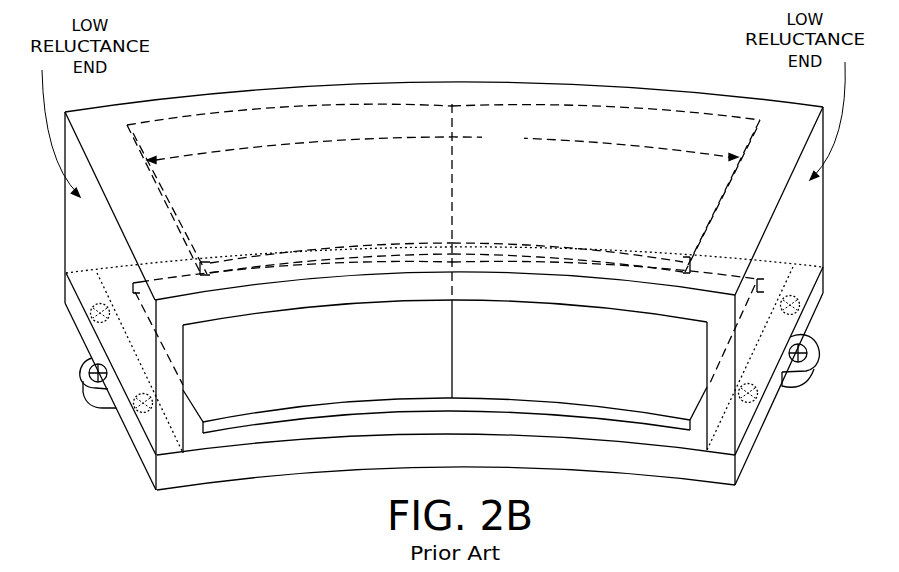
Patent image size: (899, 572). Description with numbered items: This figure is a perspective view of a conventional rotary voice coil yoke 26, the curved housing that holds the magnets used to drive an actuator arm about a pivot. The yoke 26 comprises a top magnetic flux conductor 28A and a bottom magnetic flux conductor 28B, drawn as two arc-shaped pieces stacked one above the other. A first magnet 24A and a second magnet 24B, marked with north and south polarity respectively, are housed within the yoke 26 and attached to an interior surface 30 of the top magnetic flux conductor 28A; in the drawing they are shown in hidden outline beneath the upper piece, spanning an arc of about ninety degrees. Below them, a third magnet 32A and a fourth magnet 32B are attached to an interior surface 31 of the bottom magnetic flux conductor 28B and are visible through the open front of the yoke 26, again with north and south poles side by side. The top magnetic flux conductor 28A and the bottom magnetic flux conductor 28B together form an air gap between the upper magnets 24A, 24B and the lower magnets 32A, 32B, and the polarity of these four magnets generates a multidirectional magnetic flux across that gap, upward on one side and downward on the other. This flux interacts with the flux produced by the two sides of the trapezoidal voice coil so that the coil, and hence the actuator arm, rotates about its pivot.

The rotary voice coil yoke 26 is at (444, 254).
The top magnetic flux conductor 28A is at (811, 122).
The bottom magnetic flux conductor 28B is at (722, 477).
The first magnet 24A is at (311, 221).
The second magnet 24B is at (611, 221).
The interior surface 30 is at (472, 304).
The interior surface 31 is at (415, 433).
The third magnet 32A is at (268, 378).
The fourth magnet 32B is at (568, 375).